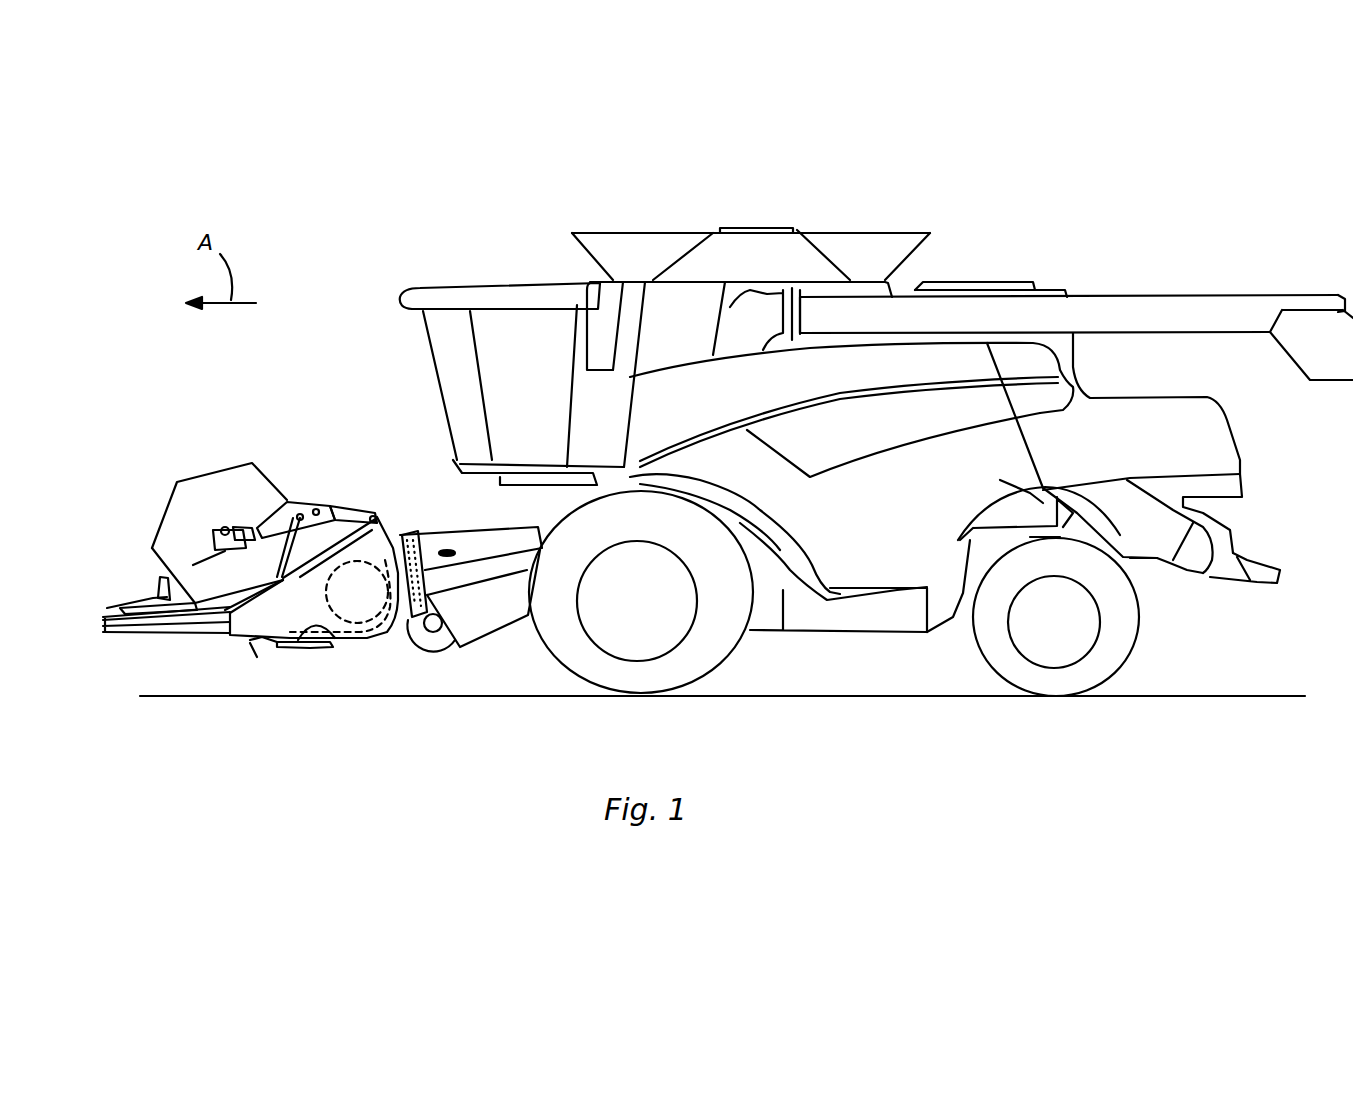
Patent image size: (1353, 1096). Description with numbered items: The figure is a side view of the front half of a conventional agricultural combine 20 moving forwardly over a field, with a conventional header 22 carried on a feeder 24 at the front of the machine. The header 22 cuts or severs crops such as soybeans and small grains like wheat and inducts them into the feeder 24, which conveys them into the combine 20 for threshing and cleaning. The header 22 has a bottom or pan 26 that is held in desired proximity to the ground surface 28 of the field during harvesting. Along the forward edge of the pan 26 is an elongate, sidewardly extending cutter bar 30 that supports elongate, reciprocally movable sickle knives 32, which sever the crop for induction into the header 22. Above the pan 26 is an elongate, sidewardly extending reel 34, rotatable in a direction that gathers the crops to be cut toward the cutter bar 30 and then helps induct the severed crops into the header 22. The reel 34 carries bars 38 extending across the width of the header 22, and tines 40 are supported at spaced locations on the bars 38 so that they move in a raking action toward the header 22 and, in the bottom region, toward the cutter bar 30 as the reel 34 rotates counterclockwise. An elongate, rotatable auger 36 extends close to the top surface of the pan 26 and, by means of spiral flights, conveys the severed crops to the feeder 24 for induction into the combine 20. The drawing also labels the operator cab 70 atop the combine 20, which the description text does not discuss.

The agricultural combine 20 is at (1052, 204).
The header 22 is at (338, 492).
The feeder 24 is at (455, 528).
The pan 26 is at (337, 647).
The ground surface 28 is at (1188, 694).
The cutter bar 30 is at (262, 652).
The sickle knives 32 is at (166, 671).
The reel 34 is at (222, 462).
The auger 36 is at (380, 613).
The bars 38 is at (313, 653).
The tines 40 is at (276, 727).
The operator cab 70 is at (480, 276).